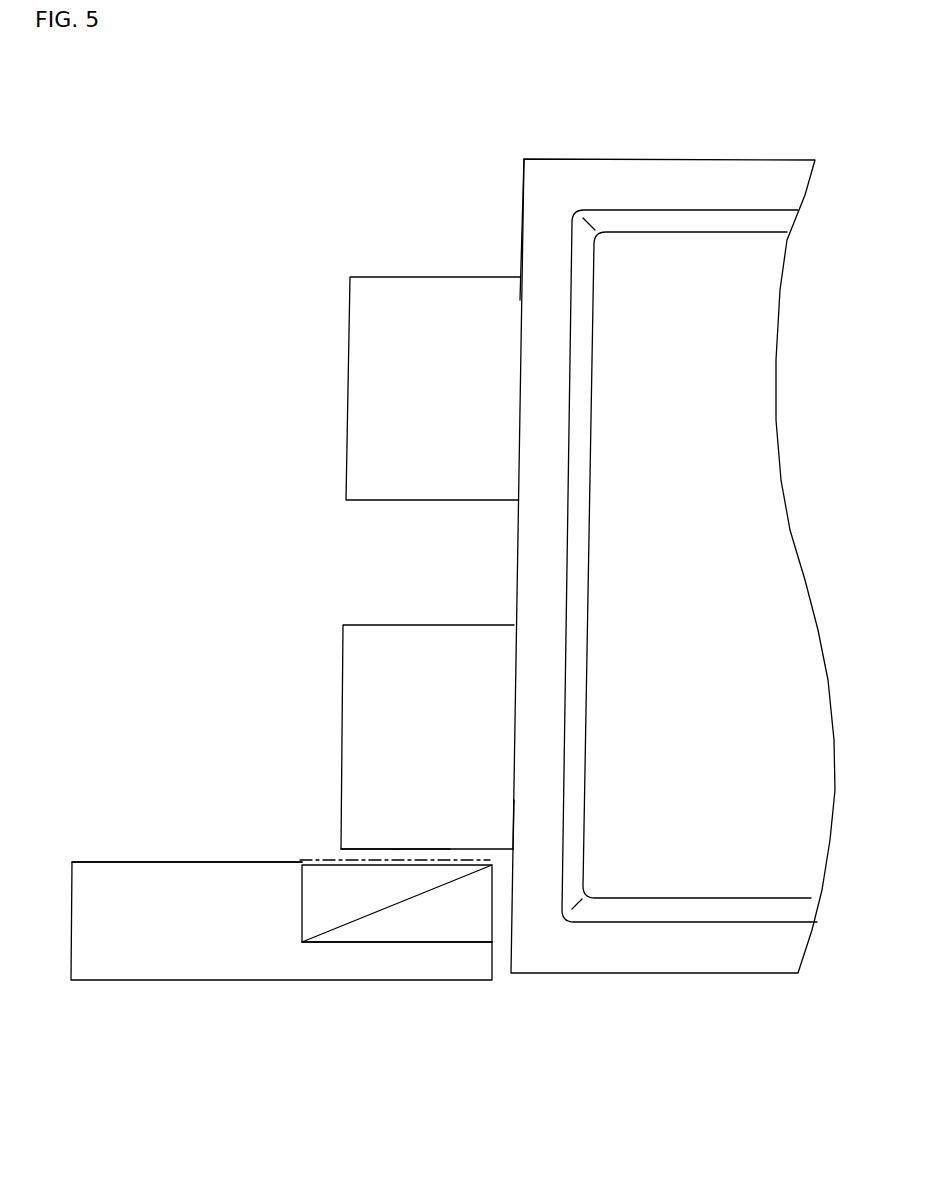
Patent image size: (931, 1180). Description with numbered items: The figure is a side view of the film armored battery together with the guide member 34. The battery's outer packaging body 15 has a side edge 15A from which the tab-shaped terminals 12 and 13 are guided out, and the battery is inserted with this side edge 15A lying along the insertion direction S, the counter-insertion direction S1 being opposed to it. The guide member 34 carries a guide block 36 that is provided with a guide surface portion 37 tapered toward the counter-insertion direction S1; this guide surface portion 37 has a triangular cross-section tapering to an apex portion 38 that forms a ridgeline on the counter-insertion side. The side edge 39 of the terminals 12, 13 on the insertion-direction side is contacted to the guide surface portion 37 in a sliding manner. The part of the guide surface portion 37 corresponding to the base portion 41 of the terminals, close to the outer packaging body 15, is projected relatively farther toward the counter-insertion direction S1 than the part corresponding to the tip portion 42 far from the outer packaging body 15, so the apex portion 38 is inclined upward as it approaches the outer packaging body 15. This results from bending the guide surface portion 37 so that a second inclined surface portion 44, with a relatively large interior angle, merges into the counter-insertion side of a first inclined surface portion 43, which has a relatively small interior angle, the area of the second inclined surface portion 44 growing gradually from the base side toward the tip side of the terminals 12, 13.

The terminal 12 is at (359, 698).
The terminal 13 is at (366, 372).
The outer packaging body 15 is at (646, 270).
The side edge 15A is at (522, 208).
The guide member 34 is at (122, 988).
The guide block 36 is at (152, 862).
The guide surface portion 37 is at (467, 927).
The apex portion 38 is at (320, 865).
The side edge 39 is at (407, 848).
The base portion 41 is at (485, 850).
The tip portion 42 is at (353, 848).
The first inclined surface portion 43 is at (415, 925).
The second inclined surface portion 44 is at (328, 905).
The insertion direction S is at (457, 912).
The counter-insertion direction S1 is at (268, 20).